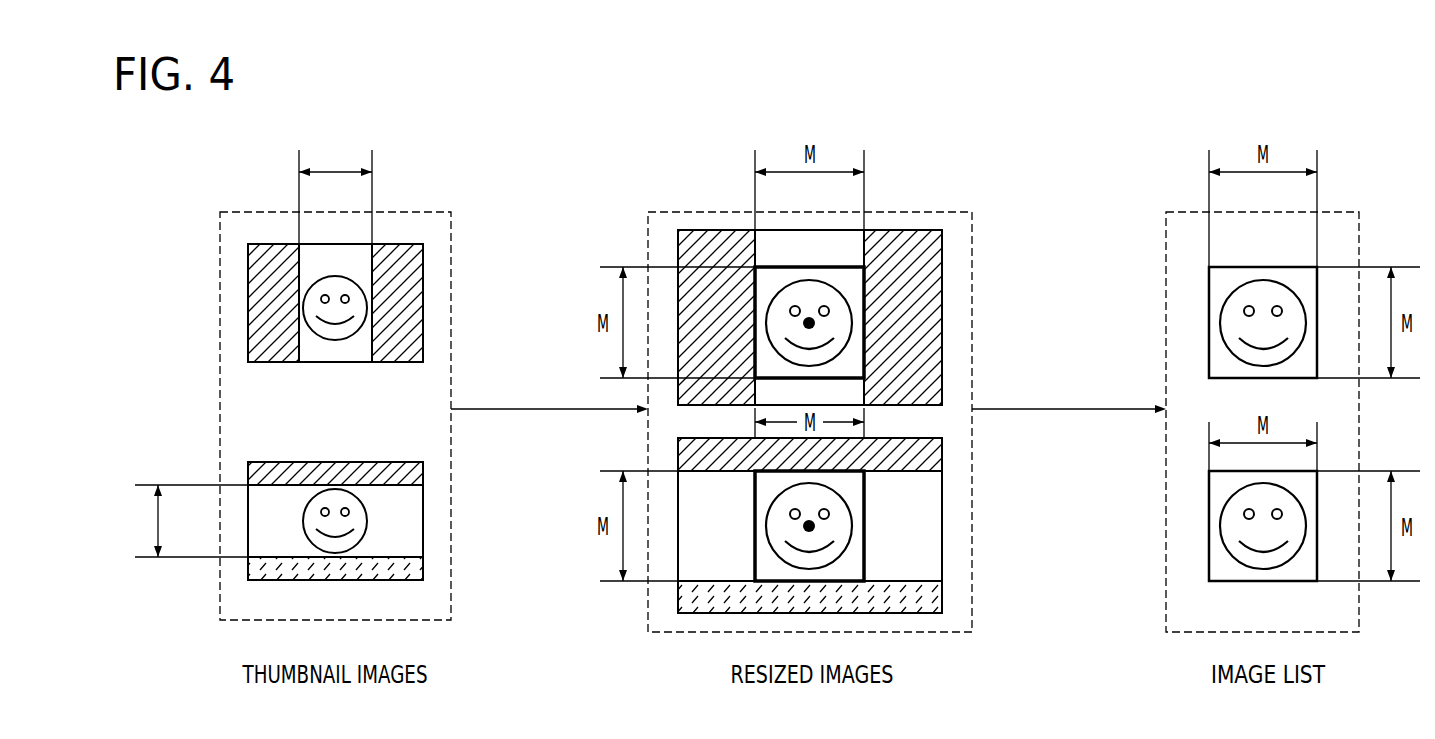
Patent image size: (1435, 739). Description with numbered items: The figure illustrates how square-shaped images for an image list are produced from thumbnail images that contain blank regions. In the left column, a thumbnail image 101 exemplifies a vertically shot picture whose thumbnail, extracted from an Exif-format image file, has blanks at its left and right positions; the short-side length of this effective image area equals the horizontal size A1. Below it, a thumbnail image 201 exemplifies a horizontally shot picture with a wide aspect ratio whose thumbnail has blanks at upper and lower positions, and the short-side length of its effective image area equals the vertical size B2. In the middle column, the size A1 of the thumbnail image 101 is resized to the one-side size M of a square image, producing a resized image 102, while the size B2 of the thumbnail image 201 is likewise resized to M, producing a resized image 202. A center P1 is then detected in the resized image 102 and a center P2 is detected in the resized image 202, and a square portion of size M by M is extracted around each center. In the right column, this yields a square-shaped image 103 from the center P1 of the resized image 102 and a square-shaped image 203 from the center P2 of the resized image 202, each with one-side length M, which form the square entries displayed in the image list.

The thumbnail image 101 is at (248, 272).
The thumbnail image 201 is at (247, 482).
The resized image 102 is at (678, 252).
The resized image 202 is at (678, 458).
The square-shaped image 103 is at (1209, 290).
The square-shaped image 203 is at (1209, 495).
The center P1 is at (809, 323).
The center P2 is at (809, 526).
The size in the horizontal direction of an effective image area A1 is at (335, 192).
The size in the vertical direction of an effective image area B2 is at (187, 521).